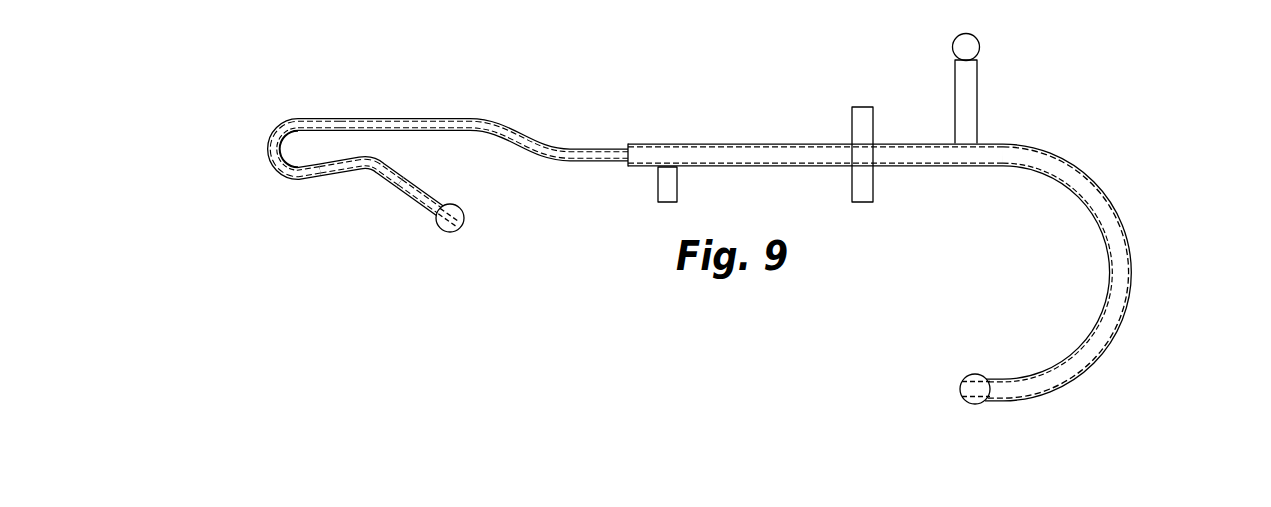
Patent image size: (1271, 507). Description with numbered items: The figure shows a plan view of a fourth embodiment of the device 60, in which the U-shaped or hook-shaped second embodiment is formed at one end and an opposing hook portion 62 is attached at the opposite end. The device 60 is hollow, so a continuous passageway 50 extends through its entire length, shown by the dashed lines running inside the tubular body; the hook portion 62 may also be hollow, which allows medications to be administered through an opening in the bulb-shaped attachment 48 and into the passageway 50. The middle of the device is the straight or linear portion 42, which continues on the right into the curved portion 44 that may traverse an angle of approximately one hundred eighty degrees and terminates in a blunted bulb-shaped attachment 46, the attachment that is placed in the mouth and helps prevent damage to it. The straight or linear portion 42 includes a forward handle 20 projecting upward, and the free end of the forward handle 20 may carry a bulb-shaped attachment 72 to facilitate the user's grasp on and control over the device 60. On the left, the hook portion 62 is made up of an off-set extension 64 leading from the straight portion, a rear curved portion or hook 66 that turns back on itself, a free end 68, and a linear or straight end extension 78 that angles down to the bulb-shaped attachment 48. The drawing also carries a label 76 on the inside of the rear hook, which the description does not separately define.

The forward handle 20 is at (978, 92).
The straight or linear portion 42 is at (742, 143).
The curved portion 44 is at (1127, 232).
The bulb-shaped attachment 46 is at (979, 380).
The bulb-shaped attachment 48 is at (457, 233).
The continuous passageway 50 is at (420, 133).
The device 60 is at (1103, 127).
The hook portion 62 is at (254, 121).
The off-set extension 64 is at (512, 128).
The rear curved portion or hook 66 is at (268, 143).
The free end 68 is at (368, 162).
The bulb-shaped attachment 72 is at (972, 37).
The inner bend 76 is at (305, 145).
The linear or straight end extension 78 is at (417, 200).